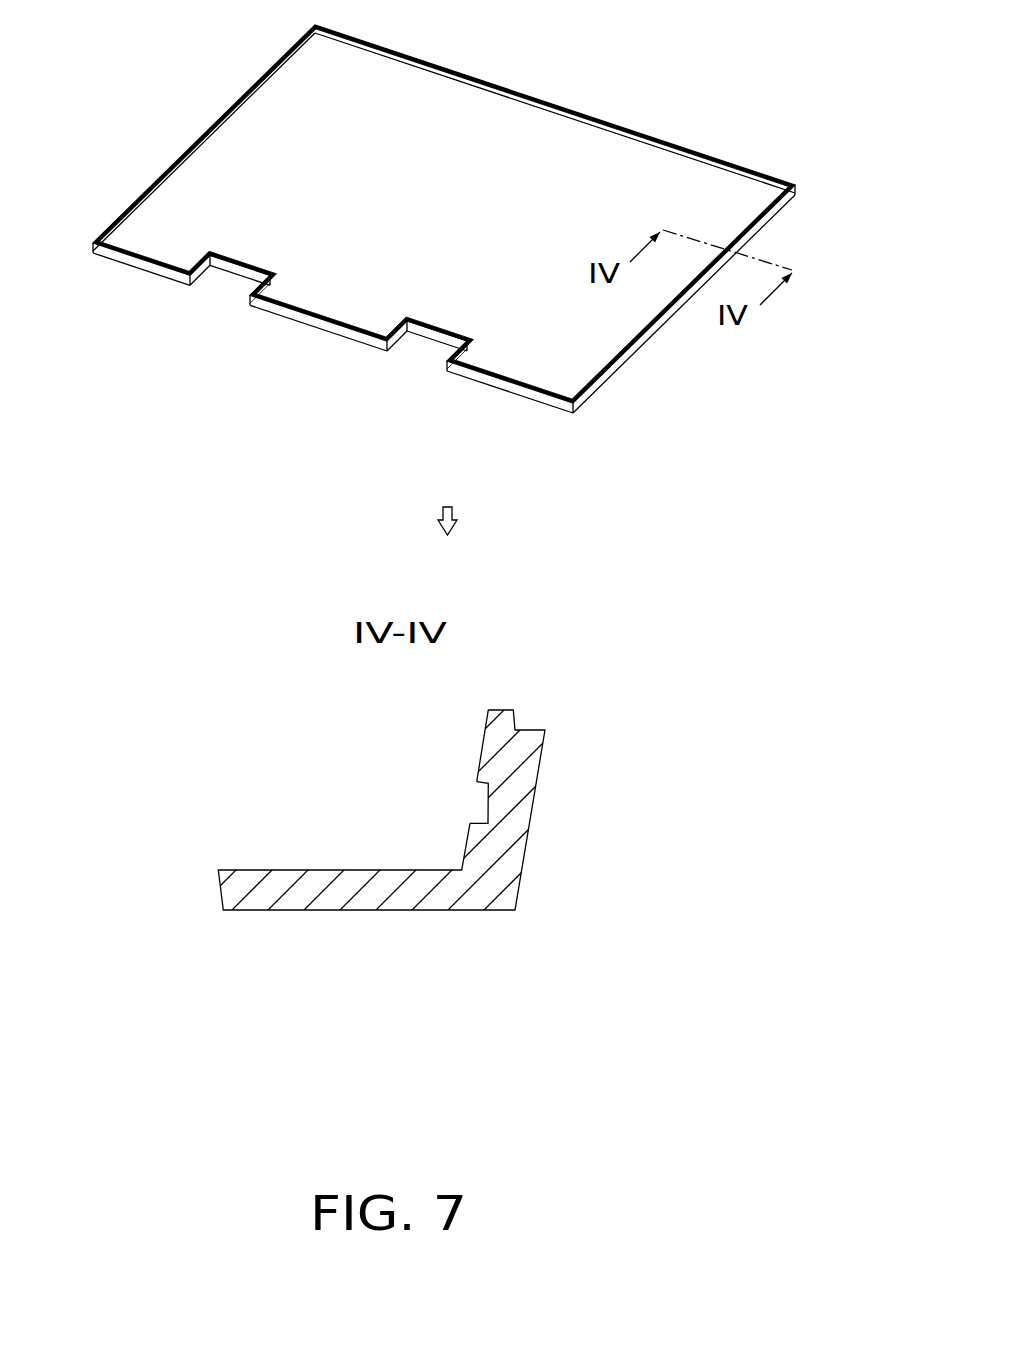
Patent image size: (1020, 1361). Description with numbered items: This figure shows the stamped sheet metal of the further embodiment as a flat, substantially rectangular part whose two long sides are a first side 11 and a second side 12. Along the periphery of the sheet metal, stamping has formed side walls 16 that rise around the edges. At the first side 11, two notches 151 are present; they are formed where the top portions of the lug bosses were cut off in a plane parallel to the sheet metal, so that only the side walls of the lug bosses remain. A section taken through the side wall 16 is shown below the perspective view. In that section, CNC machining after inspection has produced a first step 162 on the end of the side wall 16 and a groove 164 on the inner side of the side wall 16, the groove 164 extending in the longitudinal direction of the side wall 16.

The second side 12 is at (492, 82).
The first side 11 is at (132, 260).
The notch 151 is at (227, 279).
The side wall 16 is at (641, 342).
The first step 162 is at (523, 723).
The groove 164 is at (477, 805).